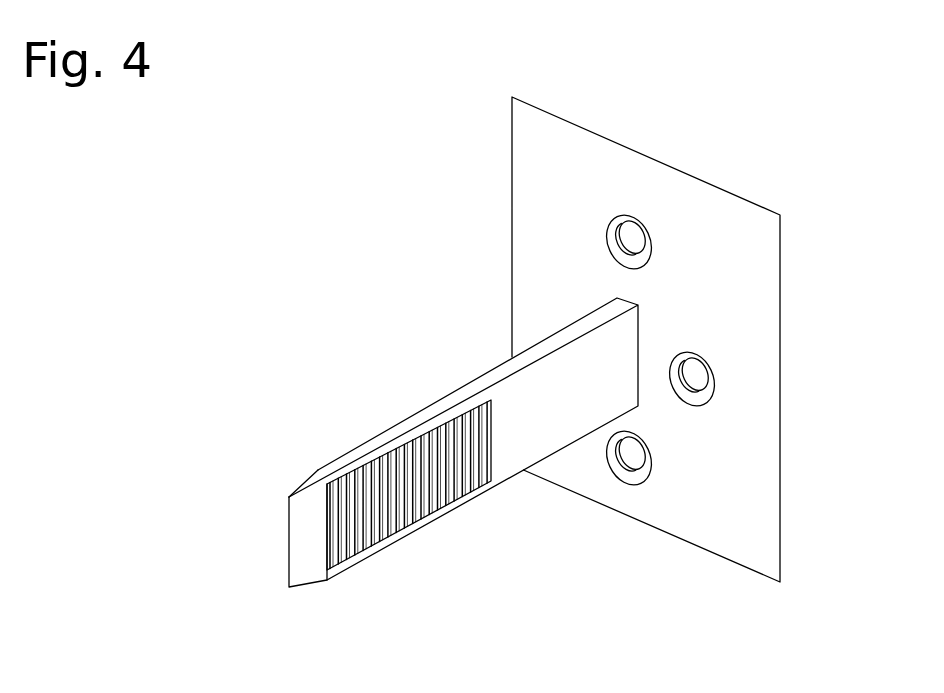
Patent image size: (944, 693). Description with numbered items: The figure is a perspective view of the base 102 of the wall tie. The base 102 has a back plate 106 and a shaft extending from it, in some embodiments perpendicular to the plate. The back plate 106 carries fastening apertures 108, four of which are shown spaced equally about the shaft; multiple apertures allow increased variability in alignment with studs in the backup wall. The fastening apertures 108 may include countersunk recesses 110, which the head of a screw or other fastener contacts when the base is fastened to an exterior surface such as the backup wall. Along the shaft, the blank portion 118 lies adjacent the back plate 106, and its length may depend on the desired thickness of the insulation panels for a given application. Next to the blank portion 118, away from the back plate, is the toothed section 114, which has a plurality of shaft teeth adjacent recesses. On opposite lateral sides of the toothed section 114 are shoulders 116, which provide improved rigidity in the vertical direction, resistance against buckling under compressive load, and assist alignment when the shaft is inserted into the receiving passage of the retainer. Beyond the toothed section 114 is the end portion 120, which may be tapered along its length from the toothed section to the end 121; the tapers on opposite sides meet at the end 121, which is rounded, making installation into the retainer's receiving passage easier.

The base 102 is at (313, 212).
The back plate 106 is at (705, 207).
The fastening apertures 108 is at (700, 380).
The countersunk recesses 110 is at (698, 397).
The toothed section 114 is at (478, 420).
The shoulders 116 is at (428, 430).
The blank portion 118 is at (448, 400).
The end portion 120 is at (303, 570).
The end 121 is at (289, 531).